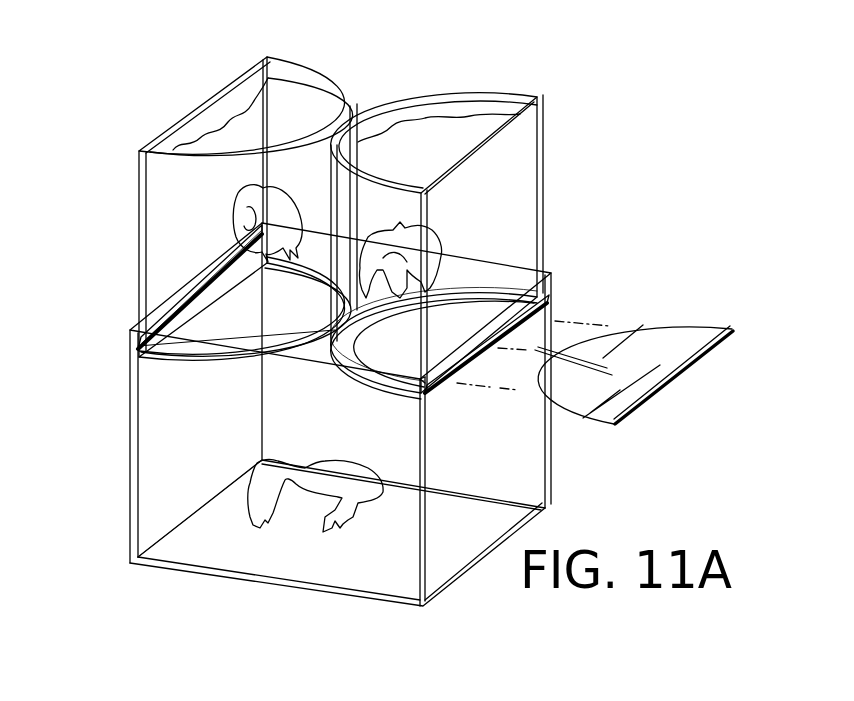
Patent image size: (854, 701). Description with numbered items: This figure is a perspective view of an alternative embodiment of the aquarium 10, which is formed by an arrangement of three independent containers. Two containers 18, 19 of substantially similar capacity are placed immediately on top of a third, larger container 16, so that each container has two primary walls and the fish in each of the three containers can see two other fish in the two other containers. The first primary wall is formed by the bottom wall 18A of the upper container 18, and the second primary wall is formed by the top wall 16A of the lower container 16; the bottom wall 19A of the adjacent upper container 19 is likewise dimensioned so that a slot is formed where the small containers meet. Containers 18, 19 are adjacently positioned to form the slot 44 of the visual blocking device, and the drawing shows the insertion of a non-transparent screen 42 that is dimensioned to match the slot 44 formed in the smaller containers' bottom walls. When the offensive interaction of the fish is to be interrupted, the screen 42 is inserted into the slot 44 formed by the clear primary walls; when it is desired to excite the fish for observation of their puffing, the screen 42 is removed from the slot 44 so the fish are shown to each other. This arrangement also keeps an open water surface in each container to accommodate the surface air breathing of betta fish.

The aquarium 10 is at (629, 70).
The container 16 is at (128, 424).
The top wall of container 16A is at (400, 400).
The container 18 is at (140, 190).
The bottom wall of container 18A is at (152, 314).
The container 19 is at (546, 166).
The bottom wall of container 19A is at (397, 395).
The non-transparent screen 42 is at (677, 347).
The slot 44 is at (546, 301).